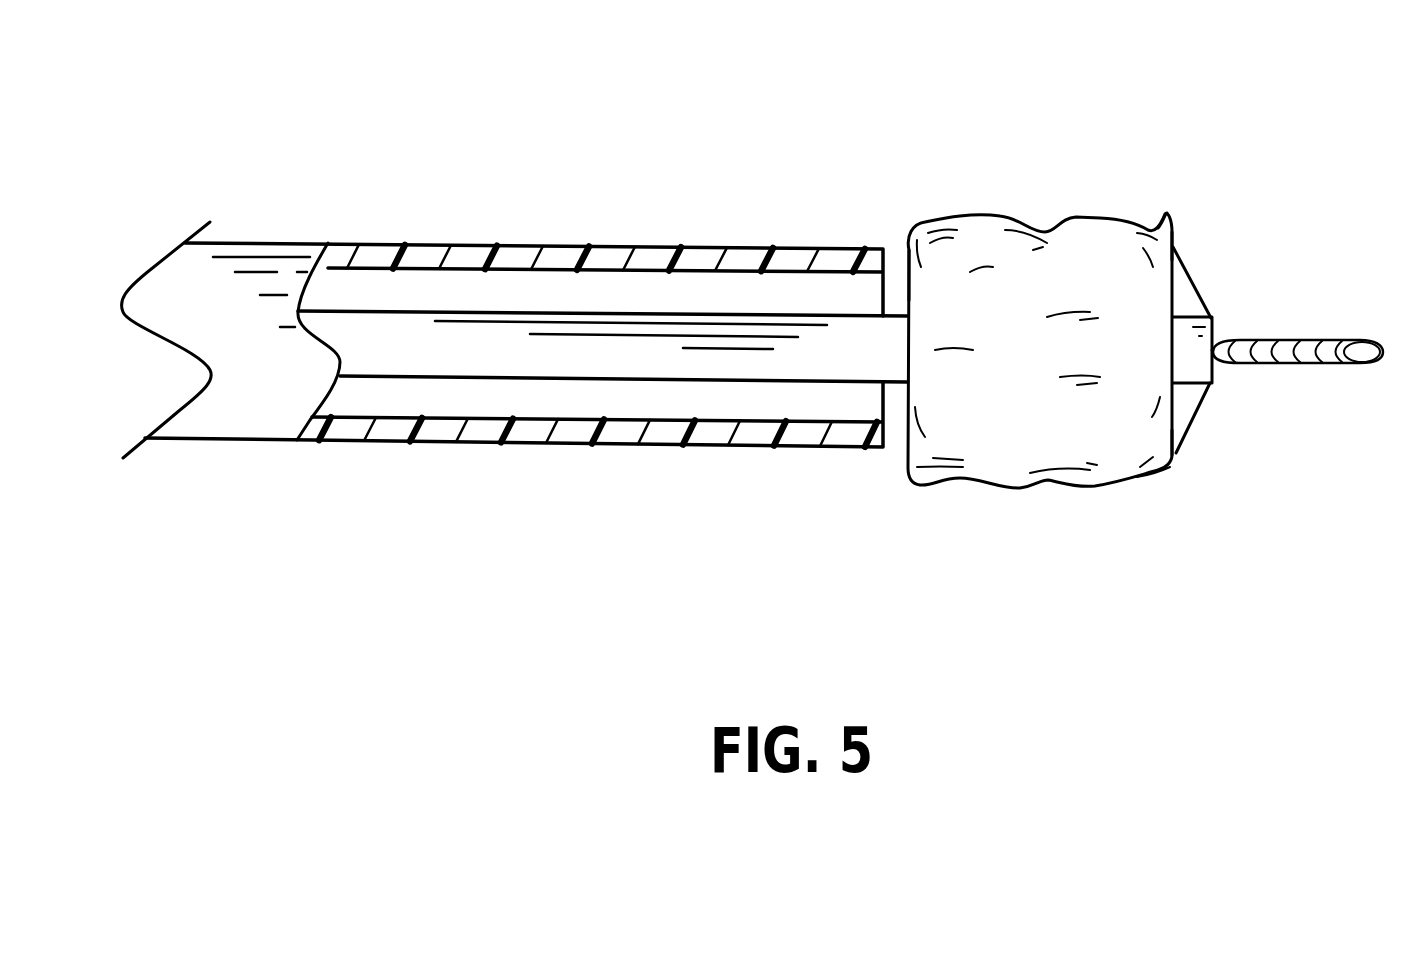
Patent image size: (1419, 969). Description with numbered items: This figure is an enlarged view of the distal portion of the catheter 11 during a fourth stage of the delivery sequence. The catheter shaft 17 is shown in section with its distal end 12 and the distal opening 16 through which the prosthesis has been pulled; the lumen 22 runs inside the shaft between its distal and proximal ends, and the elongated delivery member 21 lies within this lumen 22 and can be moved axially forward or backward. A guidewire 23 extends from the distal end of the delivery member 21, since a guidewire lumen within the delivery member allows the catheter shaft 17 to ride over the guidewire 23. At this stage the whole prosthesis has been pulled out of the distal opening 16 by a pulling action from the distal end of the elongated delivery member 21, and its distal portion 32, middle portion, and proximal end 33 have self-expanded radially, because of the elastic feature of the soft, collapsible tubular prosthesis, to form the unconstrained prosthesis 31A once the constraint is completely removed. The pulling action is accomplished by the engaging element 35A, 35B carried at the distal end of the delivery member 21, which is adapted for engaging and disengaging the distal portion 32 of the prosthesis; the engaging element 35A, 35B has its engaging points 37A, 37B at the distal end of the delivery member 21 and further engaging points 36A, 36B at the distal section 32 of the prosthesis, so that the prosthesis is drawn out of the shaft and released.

The catheter 11 is at (372, 232).
The distal end 12 is at (872, 243).
The distal opening 16 is at (888, 410).
The catheter shaft 17 is at (608, 240).
The elongated delivery member 21 is at (468, 310).
The lumen 22 is at (545, 290).
The guidewire 23 is at (1318, 338).
The unconstrained prosthesis 31A is at (1097, 227).
The distal portion of the prosthesis 32 is at (1173, 222).
The proximal end of the prosthesis 33 is at (910, 250).
The engaging element 35A is at (1200, 417).
The engaging element 35B is at (1198, 283).
The engaging point 36A is at (1185, 450).
The engaging point 36B is at (1180, 243).
The engaging point 37A is at (1218, 375).
The engaging point 37B is at (1218, 330).